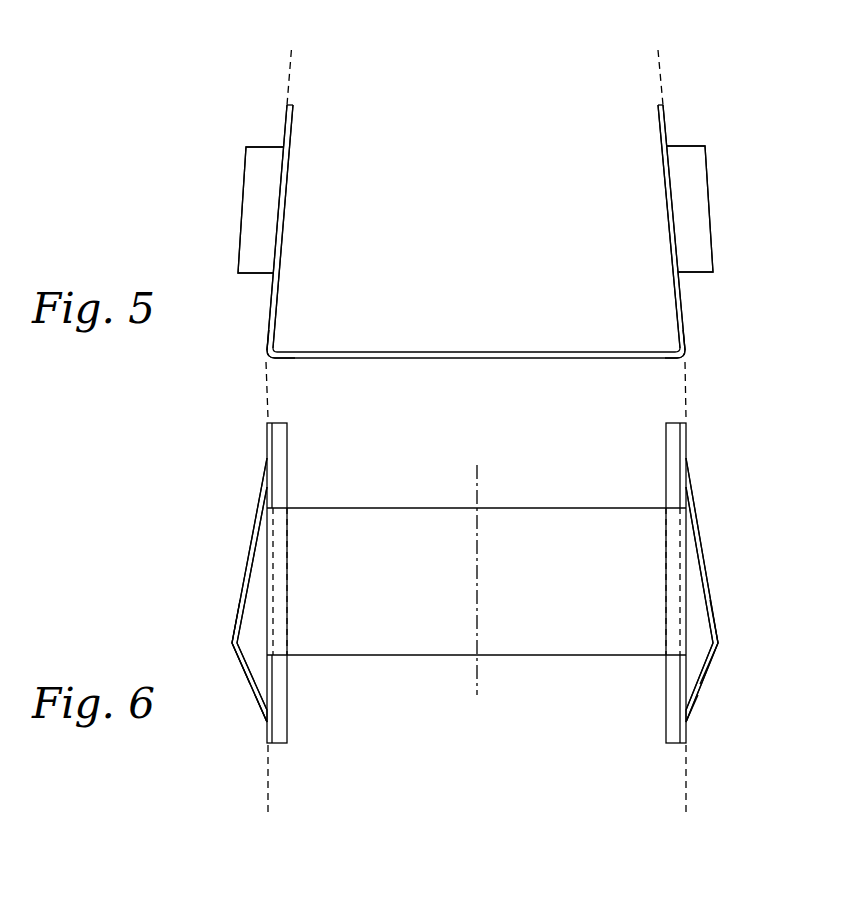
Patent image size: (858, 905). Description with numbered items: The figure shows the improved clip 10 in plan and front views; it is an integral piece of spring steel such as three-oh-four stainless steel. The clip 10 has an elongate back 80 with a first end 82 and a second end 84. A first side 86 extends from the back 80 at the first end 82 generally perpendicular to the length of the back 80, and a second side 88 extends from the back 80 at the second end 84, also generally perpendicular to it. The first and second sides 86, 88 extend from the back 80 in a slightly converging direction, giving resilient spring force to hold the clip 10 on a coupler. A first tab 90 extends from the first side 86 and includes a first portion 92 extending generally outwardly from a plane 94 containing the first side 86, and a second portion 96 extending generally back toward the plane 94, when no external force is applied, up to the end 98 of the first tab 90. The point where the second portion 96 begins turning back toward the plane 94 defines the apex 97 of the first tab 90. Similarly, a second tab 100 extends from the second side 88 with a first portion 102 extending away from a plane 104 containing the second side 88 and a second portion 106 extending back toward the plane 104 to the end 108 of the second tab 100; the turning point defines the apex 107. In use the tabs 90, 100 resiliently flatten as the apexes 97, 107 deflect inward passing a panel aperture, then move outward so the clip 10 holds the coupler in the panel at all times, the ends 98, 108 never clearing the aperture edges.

In FIG. 5, the clip 10 is at (745, 108).
In FIG. 6, the clip 10 is at (727, 448).
In FIG. 5, the back 80 is at (452, 352).
In FIG. 5, the first end 82 is at (276, 350).
In FIG. 5, the second end 84 is at (678, 352).
In FIG. 5, the first side 86 is at (290, 126).
In FIG. 6, the first side 86 is at (288, 444).
In FIG. 5, the second side 88 is at (660, 128).
In FIG. 6, the second side 88 is at (665, 460).
In FIG. 5, the first tab 90 is at (240, 207).
In FIG. 6, the first tab 90 is at (240, 575).
In FIG. 5, the first portion 92 is at (277, 222).
In FIG. 6, the first portion 92 is at (258, 517).
In FIG. 5, the plane 94 is at (288, 86).
In FIG. 6, the plane 94 is at (270, 775).
In FIG. 6, the second portion 96 is at (242, 673).
In FIG. 6, the apex 97 is at (232, 643).
In FIG. 6, the end 98 is at (265, 723).
In FIG. 5, the second tab 100 is at (712, 182).
In FIG. 6, the second tab 100 is at (712, 563).
In FIG. 5, the first portion 102 is at (680, 228).
In FIG. 6, the first portion 102 is at (700, 513).
In FIG. 5, the plane 104 is at (682, 367).
In FIG. 6, the plane 104 is at (687, 792).
In FIG. 6, the second portion 106 is at (712, 673).
In FIG. 6, the apex 107 is at (720, 642).
In FIG. 6, the end 108 is at (695, 712).